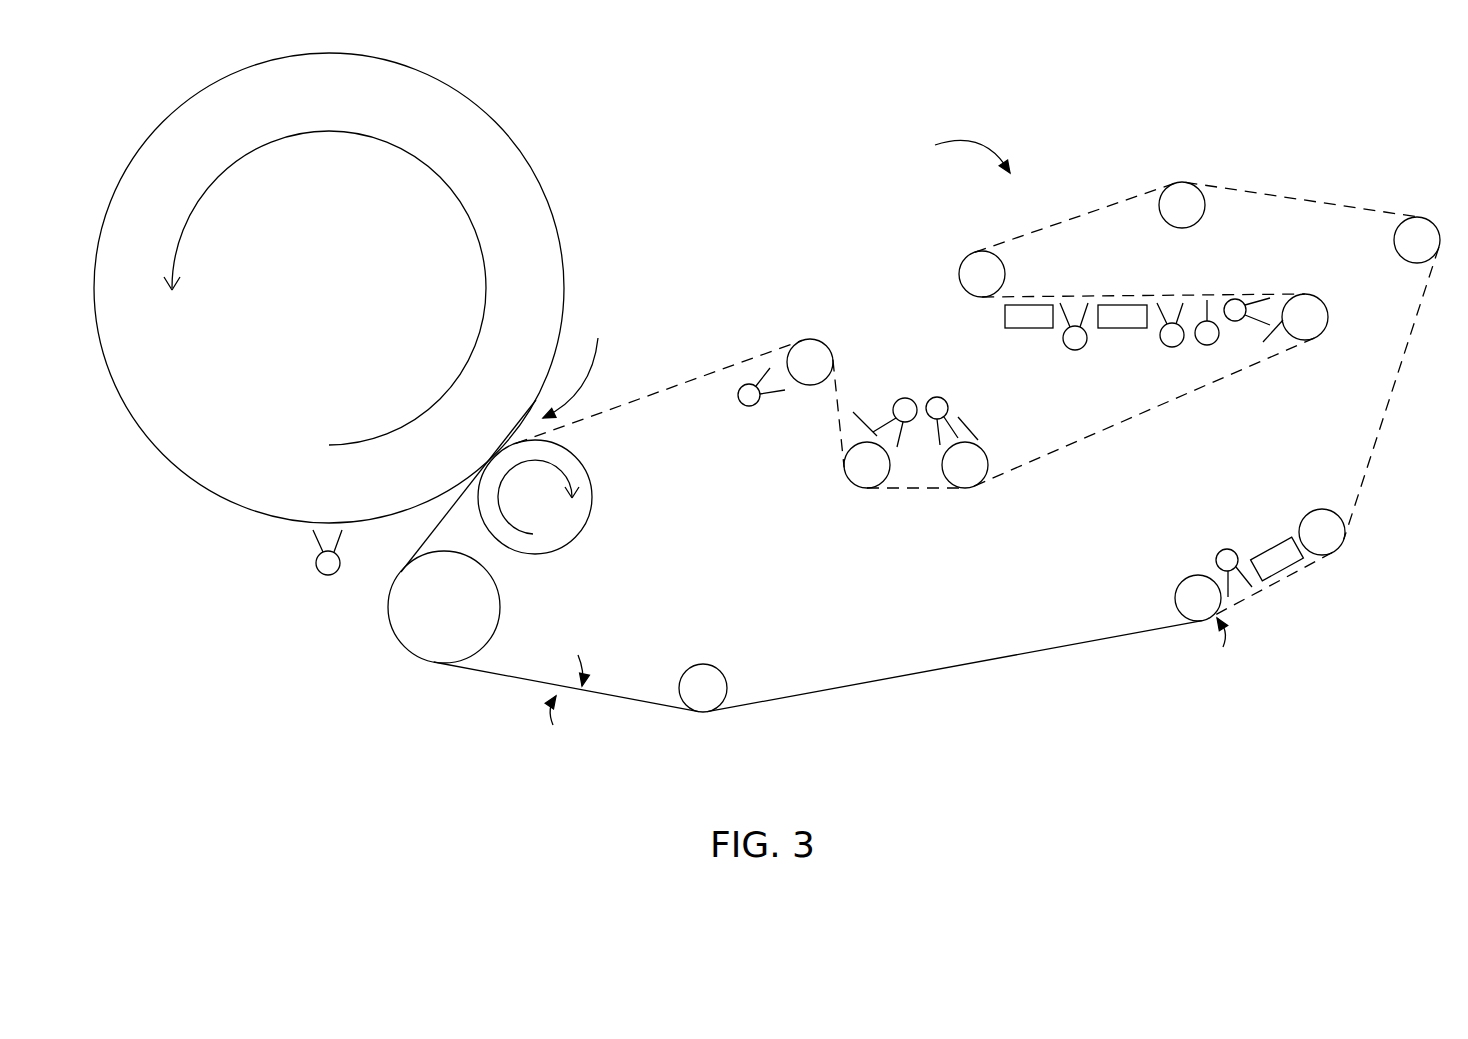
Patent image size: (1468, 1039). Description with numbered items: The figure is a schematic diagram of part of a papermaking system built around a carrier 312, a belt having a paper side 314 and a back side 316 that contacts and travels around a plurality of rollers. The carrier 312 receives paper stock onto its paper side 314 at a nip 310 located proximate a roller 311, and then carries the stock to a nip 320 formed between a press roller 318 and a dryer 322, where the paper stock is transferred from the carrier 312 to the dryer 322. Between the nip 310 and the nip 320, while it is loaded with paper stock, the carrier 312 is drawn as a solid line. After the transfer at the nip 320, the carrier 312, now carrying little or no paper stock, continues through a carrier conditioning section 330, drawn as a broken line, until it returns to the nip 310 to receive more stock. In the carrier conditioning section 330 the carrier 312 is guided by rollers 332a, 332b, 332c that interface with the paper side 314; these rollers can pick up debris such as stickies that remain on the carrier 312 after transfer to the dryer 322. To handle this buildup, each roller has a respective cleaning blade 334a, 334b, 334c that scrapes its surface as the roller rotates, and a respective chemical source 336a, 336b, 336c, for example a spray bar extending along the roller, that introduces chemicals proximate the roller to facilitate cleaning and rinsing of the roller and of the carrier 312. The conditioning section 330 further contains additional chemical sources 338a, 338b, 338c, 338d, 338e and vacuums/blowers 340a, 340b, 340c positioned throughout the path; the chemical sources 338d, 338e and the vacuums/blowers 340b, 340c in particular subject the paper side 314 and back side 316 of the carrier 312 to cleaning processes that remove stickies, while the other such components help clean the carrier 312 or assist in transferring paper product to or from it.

The nip 310 is at (1217, 650).
The roller 311 is at (1178, 588).
The carrier 312 is at (830, 690).
The paper side 314 is at (631, 710).
The back side 316 is at (493, 618).
The press roller 318 is at (576, 457).
The nip 320 is at (578, 364).
The dryer 322 is at (492, 115).
The carrier conditioning section 330 is at (978, 377).
The roller 332a is at (883, 481).
The roller 332b is at (987, 481).
The roller 332c is at (1327, 332).
The cleaning blade 334a is at (862, 418).
The cleaning blade 334b is at (970, 422).
The cleaning blade 334c is at (1268, 335).
The chemical source 336a is at (912, 399).
The chemical source 336b is at (947, 397).
The chemical source 336c is at (1243, 302).
The chemical source 338a is at (1215, 558).
The chemical source 338b is at (323, 565).
The chemical source 338c is at (740, 399).
The chemical source 338d is at (1165, 337).
The chemical source 338e is at (1078, 342).
The vacuum/blower 340a is at (1297, 568).
The vacuum/blower 340b is at (1128, 310).
The vacuum/blower 340c is at (1038, 310).